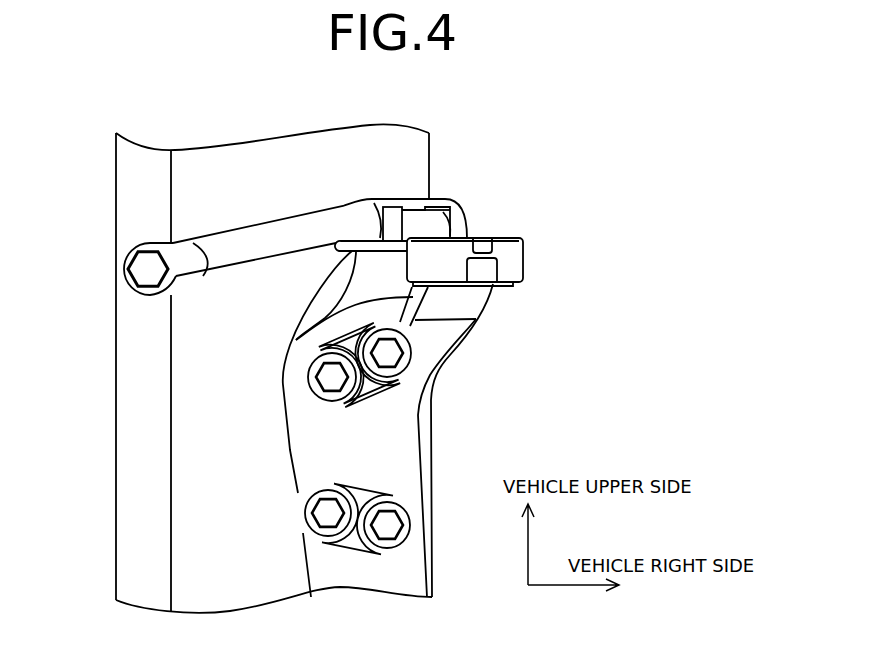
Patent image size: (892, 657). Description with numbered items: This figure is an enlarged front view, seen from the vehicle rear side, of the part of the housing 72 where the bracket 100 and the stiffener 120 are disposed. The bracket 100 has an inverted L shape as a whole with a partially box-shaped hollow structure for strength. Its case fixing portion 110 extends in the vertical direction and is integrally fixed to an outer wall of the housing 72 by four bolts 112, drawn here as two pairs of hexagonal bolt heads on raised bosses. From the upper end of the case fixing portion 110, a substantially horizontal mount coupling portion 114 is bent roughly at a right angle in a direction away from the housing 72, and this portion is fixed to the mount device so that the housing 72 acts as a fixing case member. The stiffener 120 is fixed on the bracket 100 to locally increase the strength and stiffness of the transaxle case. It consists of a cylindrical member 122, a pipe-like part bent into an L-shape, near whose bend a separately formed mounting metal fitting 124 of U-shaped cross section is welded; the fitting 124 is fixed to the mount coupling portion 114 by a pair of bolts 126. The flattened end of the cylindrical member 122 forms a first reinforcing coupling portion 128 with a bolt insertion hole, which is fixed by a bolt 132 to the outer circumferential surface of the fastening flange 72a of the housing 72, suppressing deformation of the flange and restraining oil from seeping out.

The housing 72 is at (103, 164).
The fastening flange 72a is at (147, 426).
The bracket 100 is at (501, 223).
The case fixing portion 110 is at (380, 437).
The bolts 112 is at (332, 377).
The mount coupling portion 114 is at (507, 263).
The stiffener 120 is at (264, 189).
The cylindrical member 122 is at (248, 243).
The mounting metal fitting 124 is at (392, 222).
The bolts 126 is at (432, 225).
The first reinforcing coupling portion 128 is at (148, 244).
The bolt 132 is at (147, 270).